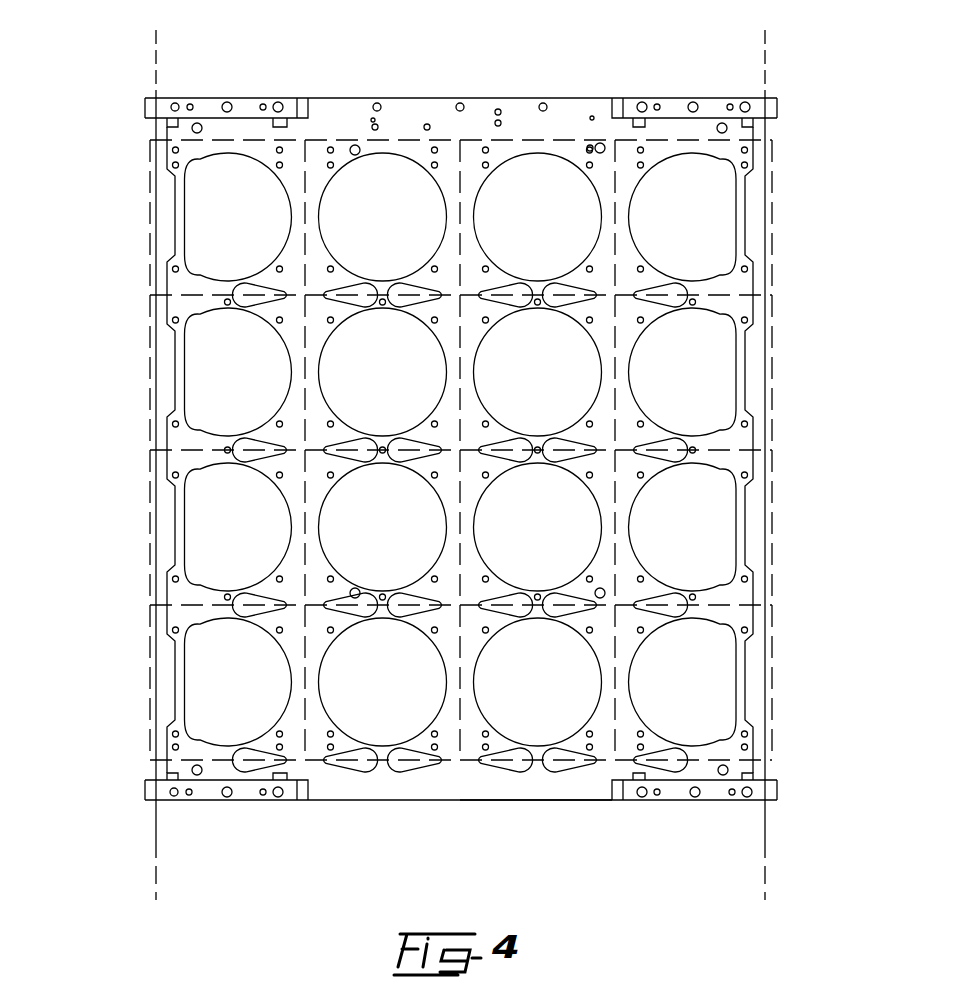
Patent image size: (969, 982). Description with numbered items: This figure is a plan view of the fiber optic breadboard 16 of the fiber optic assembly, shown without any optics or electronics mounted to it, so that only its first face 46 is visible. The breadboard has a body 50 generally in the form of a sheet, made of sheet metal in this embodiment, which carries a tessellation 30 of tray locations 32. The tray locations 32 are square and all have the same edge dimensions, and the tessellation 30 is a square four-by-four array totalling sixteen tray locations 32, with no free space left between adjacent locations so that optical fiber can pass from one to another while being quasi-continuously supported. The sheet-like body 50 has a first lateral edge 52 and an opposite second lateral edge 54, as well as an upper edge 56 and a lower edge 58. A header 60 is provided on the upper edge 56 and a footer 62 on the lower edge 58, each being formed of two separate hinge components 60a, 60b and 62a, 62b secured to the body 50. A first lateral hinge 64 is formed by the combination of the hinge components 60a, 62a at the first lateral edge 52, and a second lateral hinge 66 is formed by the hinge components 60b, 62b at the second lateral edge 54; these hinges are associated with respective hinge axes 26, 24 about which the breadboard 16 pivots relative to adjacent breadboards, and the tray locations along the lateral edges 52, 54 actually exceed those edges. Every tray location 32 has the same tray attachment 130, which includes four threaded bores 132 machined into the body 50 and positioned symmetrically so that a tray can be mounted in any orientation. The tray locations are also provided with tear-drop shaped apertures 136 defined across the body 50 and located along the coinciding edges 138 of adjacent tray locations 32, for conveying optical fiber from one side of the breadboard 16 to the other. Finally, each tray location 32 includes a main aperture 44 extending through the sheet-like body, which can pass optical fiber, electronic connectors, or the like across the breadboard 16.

The fiber optic breadboard 16 is at (457, 476).
The hinge axis 24 is at (770, 885).
The hinge axis 26 is at (153, 878).
The tessellation 30 is at (138, 698).
The tray locations 32 is at (450, 303).
The main aperture 44 is at (542, 380).
The face 46 is at (565, 800).
The body 50 is at (172, 282).
The first lateral edge 52 is at (173, 530).
The second lateral edge 54 is at (750, 530).
The upper edge 56 is at (505, 97).
The lower edge 58 is at (385, 800).
The header 60 is at (240, 110).
The hinge component 60a is at (205, 107).
The hinge component 60b is at (712, 102).
The footer 62 is at (270, 800).
The hinge component 62a is at (202, 800).
The hinge component 62b is at (725, 800).
The first lateral hinge 64 is at (148, 103).
The second lateral hinge 66 is at (775, 103).
The tray attachment 130 is at (167, 153).
The threaded bores 132 is at (278, 167).
The apertures 136 is at (522, 282).
The coinciding edges 138 is at (592, 303).